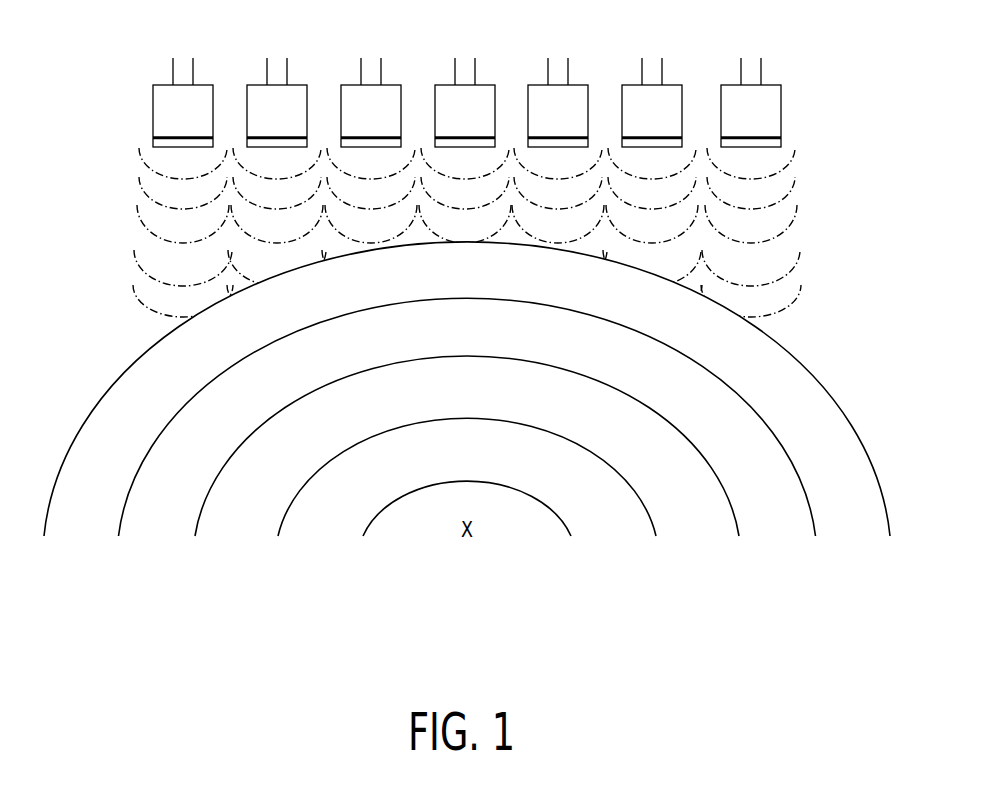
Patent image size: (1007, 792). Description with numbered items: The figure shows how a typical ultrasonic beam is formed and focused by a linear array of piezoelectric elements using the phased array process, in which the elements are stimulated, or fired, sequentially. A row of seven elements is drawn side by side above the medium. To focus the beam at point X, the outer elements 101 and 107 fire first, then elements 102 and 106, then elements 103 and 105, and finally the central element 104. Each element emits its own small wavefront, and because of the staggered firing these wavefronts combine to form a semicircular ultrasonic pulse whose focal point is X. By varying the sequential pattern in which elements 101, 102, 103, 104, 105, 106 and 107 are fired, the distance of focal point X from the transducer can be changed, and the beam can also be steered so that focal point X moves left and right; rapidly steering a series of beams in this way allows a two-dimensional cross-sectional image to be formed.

The outer element 101 is at (161, 109).
The element 102 is at (255, 92).
The element 103 is at (388, 92).
The element 104 is at (482, 92).
The element 105 is at (575, 92).
The element 106 is at (667, 92).
The outer element 107 is at (775, 105).